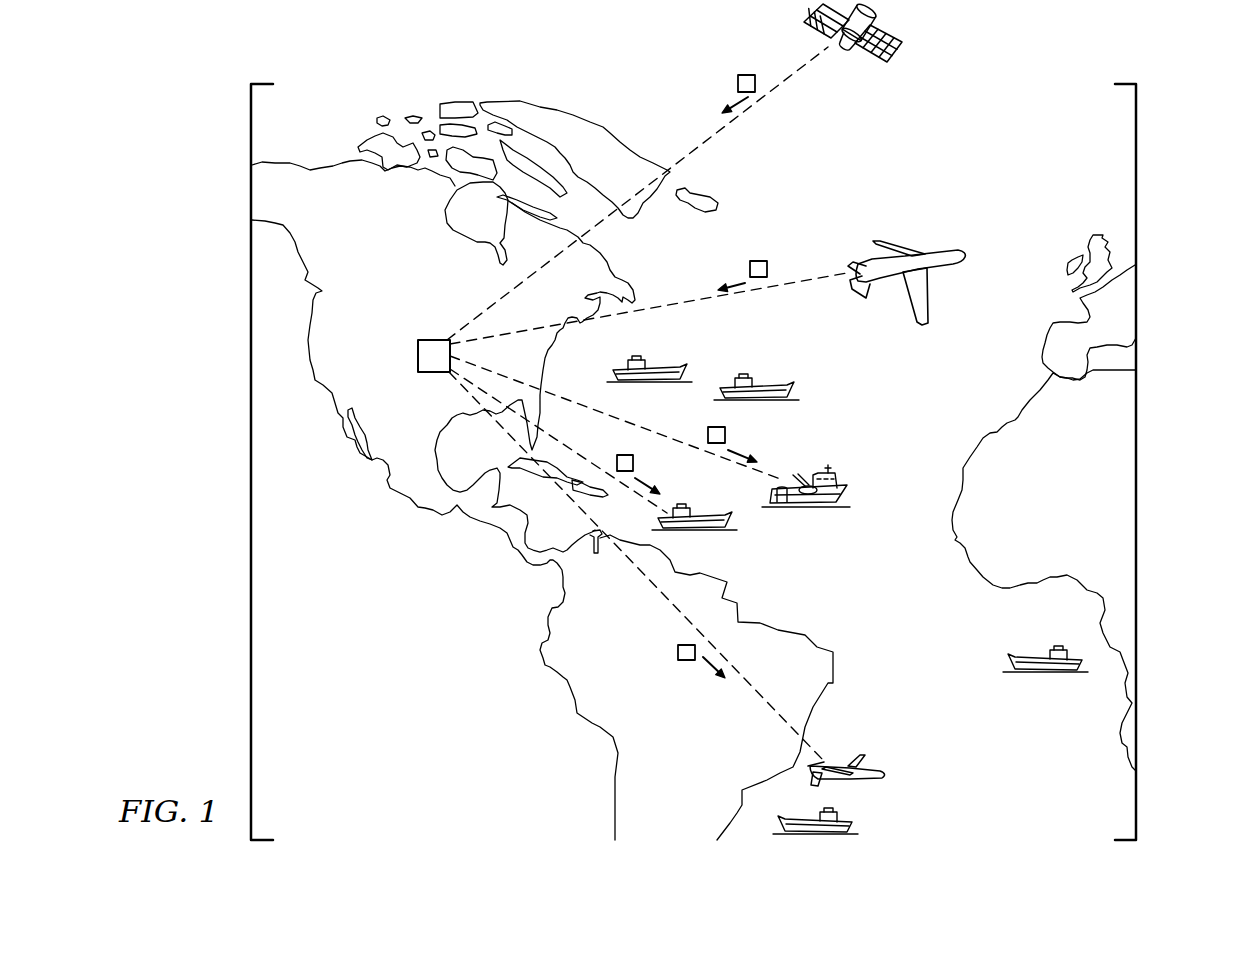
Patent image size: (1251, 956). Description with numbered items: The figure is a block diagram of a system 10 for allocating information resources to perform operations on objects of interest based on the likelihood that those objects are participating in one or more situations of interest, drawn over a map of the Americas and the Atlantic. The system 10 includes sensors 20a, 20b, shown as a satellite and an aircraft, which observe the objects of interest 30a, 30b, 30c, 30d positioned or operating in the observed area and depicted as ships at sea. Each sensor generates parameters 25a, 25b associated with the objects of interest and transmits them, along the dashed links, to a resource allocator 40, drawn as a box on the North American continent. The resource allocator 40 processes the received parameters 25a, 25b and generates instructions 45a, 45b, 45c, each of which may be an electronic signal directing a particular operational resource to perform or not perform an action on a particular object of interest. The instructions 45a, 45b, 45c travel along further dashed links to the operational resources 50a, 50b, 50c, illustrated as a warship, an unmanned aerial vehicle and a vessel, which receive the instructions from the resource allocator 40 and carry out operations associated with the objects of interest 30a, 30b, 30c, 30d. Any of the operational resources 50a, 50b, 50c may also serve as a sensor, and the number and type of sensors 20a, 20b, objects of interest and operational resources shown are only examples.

The system 10 is at (1181, 160).
The sensor 20a is at (900, 50).
The sensor 20b is at (934, 253).
The parameter 25a is at (746, 75).
The parameter 25b is at (759, 261).
The object of interest 30a is at (663, 369).
The object of interest 30b is at (770, 387).
The object of interest 30c is at (840, 822).
The object of interest 30d is at (1031, 652).
The resource allocator 40 is at (434, 340).
The instruction 45a is at (678, 652).
The instruction 45b is at (725, 436).
The instruction 45c is at (633, 463).
The operational resource 50a is at (847, 481).
The operational resource 50b is at (861, 766).
The operational resource 50c is at (699, 513).